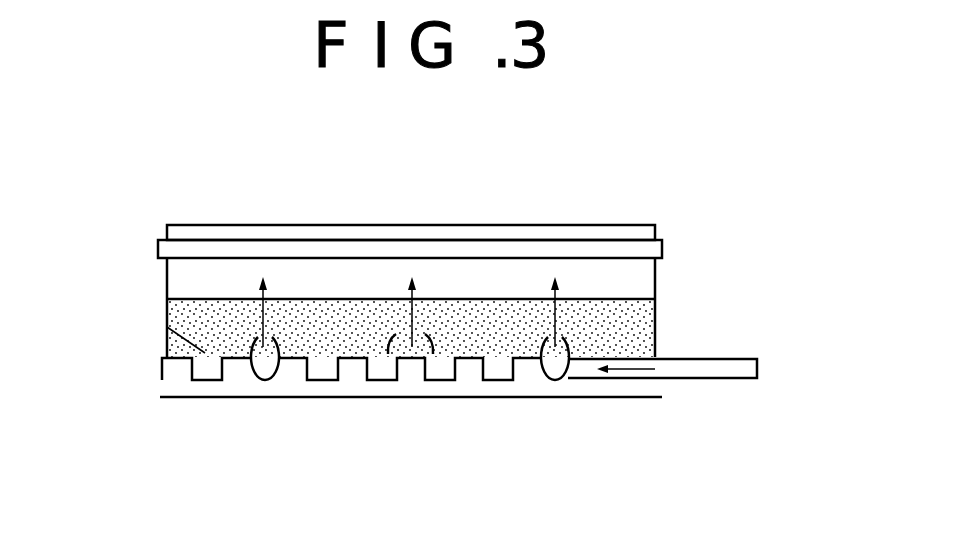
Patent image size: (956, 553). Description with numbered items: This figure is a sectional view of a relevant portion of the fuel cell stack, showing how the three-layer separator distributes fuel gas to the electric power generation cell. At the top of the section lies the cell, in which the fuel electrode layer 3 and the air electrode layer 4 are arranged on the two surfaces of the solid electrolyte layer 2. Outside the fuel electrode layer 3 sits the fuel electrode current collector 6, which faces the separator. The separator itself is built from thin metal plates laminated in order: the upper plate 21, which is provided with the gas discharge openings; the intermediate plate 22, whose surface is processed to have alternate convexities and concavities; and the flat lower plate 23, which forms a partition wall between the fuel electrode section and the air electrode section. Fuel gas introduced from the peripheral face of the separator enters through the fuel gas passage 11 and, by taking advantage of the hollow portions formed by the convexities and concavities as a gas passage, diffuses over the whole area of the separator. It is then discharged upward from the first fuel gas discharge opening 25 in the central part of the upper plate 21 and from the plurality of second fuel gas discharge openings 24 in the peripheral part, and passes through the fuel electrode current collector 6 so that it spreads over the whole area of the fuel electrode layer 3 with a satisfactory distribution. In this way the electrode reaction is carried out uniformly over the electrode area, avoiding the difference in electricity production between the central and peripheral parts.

The solid electrolyte layer 2 is at (663, 247).
The fuel electrode layer 3 is at (637, 278).
The air electrode layer 4 is at (598, 230).
The fuel electrode current collector 6 is at (630, 328).
The fuel gas passage 11 is at (723, 380).
The upper plate 21 is at (167, 327).
The intermediate plate 22 is at (178, 370).
The lower plate 23 is at (183, 398).
The second fuel gas discharge openings 24 is at (264, 352).
The first fuel gas discharge opening 25 is at (414, 350).